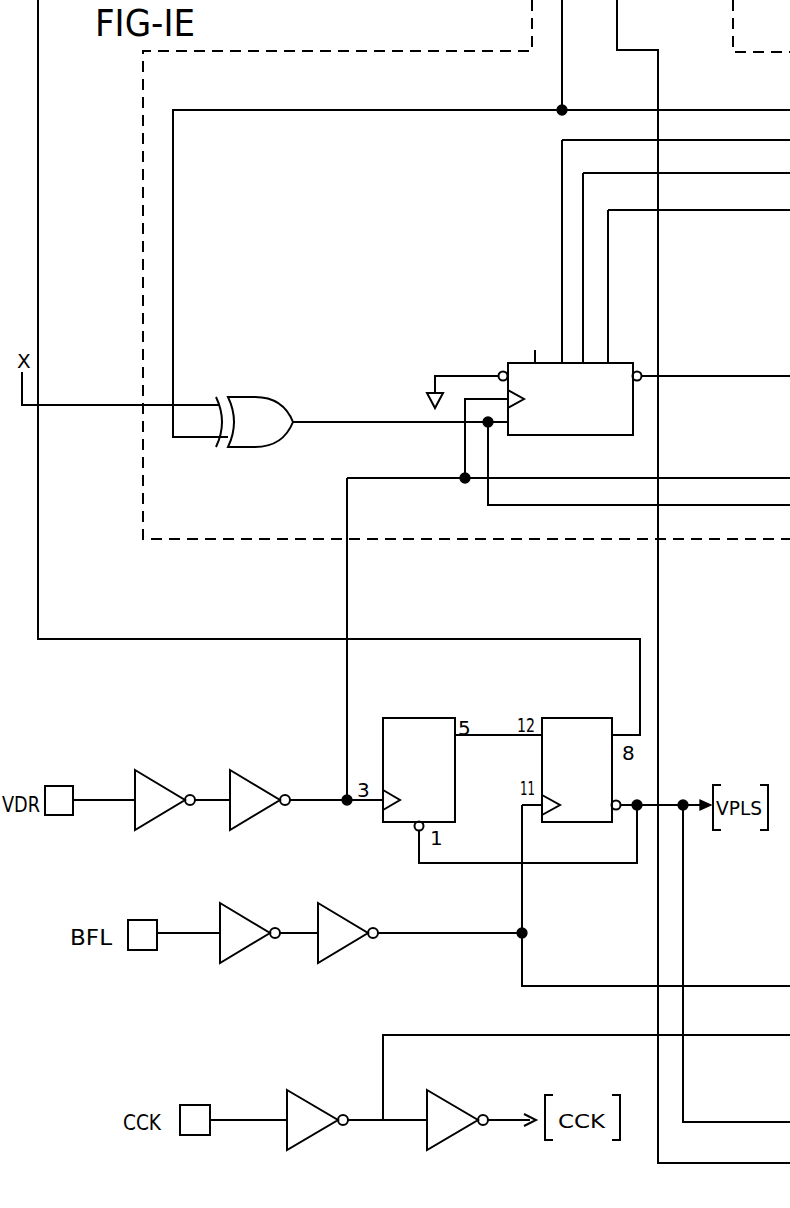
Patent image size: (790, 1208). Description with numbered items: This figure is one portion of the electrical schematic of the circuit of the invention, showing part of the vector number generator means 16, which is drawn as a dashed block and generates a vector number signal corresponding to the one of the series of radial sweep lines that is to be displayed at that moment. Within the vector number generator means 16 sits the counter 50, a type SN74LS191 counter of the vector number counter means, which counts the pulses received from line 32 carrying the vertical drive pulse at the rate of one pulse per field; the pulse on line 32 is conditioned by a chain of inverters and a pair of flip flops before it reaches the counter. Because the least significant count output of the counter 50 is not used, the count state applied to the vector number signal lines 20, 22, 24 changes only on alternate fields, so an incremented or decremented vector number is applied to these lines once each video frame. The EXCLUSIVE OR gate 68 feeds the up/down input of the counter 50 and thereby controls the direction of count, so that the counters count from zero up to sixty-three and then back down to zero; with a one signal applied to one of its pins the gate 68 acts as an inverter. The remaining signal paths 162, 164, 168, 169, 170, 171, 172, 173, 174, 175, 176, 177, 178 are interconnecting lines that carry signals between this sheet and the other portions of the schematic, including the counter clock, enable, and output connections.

The vector number generator means 16 is at (757, 5).
The vector number signal line 20 is at (561, 260).
The vector number signal line 22 is at (582, 222).
The vector number signal line 24 is at (634, 266).
The vertical drive pulse line 32 is at (346, 716).
The counter 50 is at (521, 362).
The EXCLUSIVE OR gate 68 is at (257, 397).
The signal line 162 is at (39, 76).
The signal line 164 is at (563, 16).
The signal line 168 is at (619, 16).
The output line 169 is at (713, 110).
The output line 170 is at (760, 142).
The output line 171 is at (758, 174).
The output line 172 is at (758, 211).
The output line 173 is at (748, 368).
The output line 174 is at (748, 474).
The output line 175 is at (748, 506).
The output line 176 is at (716, 985).
The output line 177 is at (708, 1034).
The output line 178 is at (710, 1121).